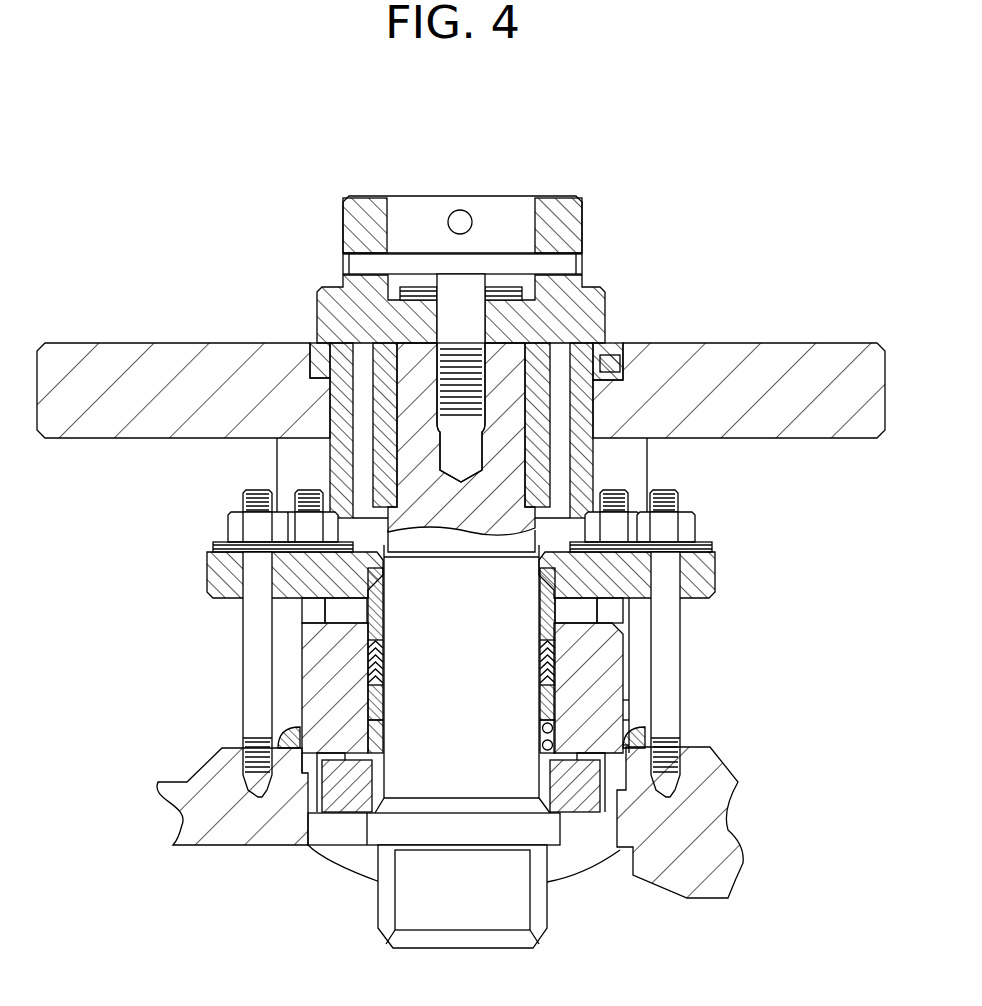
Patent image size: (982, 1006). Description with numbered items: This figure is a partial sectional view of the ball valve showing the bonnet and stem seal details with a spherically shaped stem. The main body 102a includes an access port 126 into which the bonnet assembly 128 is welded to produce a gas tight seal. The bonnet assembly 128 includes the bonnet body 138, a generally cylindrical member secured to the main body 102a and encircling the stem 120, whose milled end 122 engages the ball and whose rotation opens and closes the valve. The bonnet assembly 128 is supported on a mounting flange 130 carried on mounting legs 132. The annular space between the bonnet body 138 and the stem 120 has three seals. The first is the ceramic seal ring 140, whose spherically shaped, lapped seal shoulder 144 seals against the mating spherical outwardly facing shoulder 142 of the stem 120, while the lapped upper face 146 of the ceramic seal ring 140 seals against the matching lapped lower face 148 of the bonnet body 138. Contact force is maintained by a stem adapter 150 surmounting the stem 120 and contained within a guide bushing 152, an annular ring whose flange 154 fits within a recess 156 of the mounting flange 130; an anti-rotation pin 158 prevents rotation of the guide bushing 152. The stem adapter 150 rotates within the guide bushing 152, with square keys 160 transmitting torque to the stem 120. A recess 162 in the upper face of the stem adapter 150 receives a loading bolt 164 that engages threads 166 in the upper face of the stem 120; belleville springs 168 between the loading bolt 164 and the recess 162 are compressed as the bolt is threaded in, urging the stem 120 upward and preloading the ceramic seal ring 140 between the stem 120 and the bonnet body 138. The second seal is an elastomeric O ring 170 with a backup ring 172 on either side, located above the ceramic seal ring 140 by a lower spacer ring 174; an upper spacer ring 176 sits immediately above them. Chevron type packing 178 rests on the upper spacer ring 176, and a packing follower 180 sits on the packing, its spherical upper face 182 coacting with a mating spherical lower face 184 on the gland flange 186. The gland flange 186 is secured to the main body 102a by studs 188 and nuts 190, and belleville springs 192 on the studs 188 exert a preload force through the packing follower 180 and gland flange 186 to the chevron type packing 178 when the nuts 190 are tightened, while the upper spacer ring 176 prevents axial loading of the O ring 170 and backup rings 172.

The main body 102a is at (188, 845).
The stem 120 is at (548, 920).
The milled end 122 is at (450, 930).
The access port 126 is at (612, 840).
The bonnet assembly 128 is at (757, 517).
The mounting flange 130 is at (806, 343).
The mounting legs 132 is at (648, 462).
The bonnet body 138 is at (621, 648).
The ceramic seal ring 140 is at (620, 790).
The outwardly facing shoulder 142 is at (345, 820).
The seal shoulder 144 is at (365, 827).
The upper face 146 is at (350, 736).
The lower face 148 is at (385, 772).
The stem adapter 150 is at (603, 290).
The guide bushing 152 is at (330, 400).
The flange 154 is at (318, 352).
The recess 156 is at (353, 343).
The anti-rotation pin 158 is at (618, 342).
The square keys 160 is at (377, 320).
The recess 162 is at (516, 196).
The loading bolt 164 is at (558, 273).
The threads 166 is at (443, 418).
The belleville springs 168 is at (397, 291).
The O ring 170 is at (592, 722).
The backup ring 172 is at (590, 706).
The lower spacer ring 174 is at (540, 750).
The upper spacer ring 176 is at (383, 698).
The chevron type packing 178 is at (383, 663).
The packing follower 180 is at (383, 600).
The spherical upper face 182 is at (557, 563).
The spherical lower face 184 is at (557, 605).
The gland flange 186 is at (207, 575).
The studs 188 is at (243, 653).
The nuts 190 is at (228, 523).
The belleville springs 192 is at (213, 545).